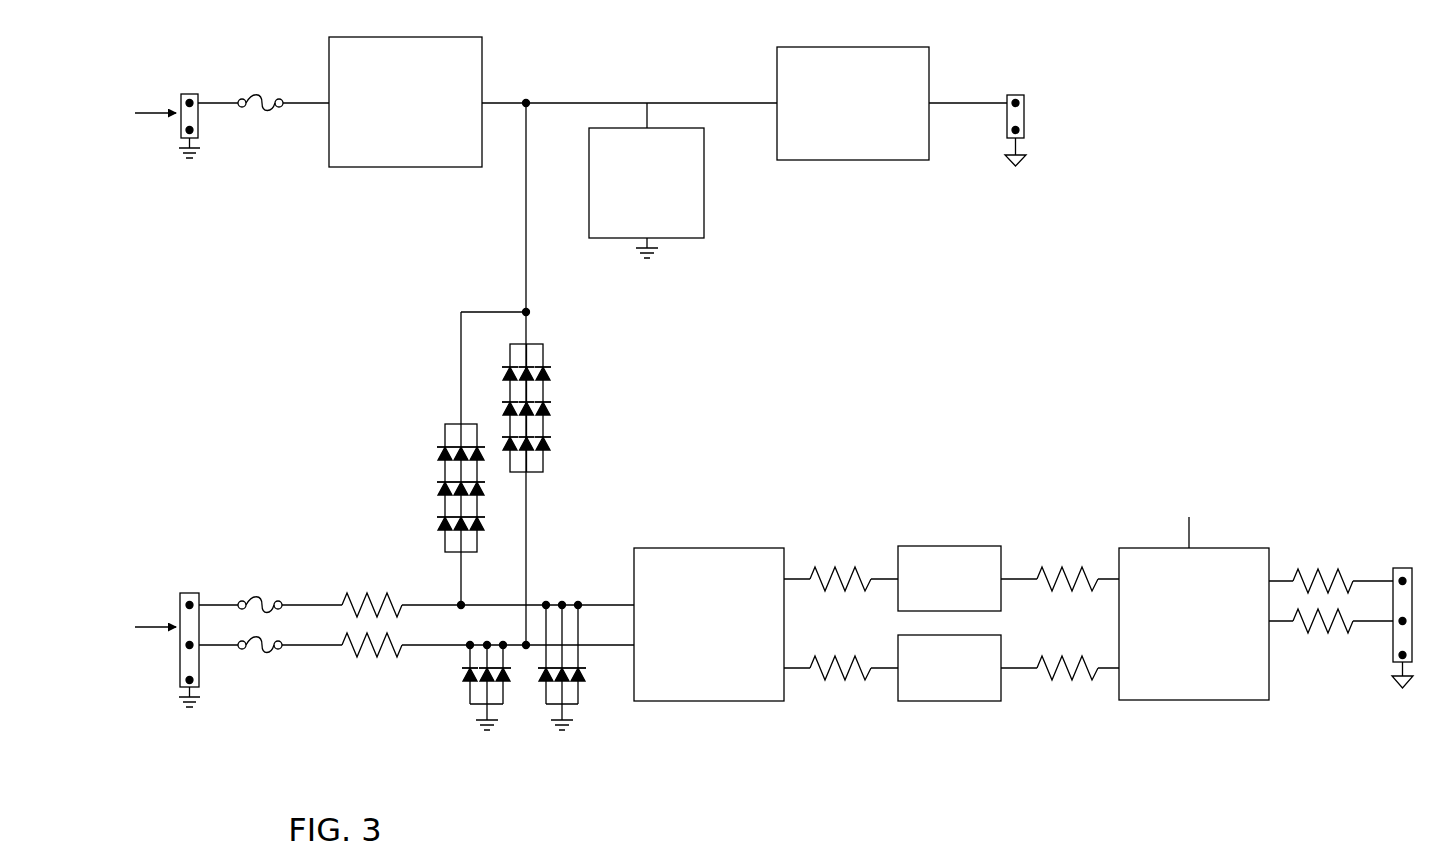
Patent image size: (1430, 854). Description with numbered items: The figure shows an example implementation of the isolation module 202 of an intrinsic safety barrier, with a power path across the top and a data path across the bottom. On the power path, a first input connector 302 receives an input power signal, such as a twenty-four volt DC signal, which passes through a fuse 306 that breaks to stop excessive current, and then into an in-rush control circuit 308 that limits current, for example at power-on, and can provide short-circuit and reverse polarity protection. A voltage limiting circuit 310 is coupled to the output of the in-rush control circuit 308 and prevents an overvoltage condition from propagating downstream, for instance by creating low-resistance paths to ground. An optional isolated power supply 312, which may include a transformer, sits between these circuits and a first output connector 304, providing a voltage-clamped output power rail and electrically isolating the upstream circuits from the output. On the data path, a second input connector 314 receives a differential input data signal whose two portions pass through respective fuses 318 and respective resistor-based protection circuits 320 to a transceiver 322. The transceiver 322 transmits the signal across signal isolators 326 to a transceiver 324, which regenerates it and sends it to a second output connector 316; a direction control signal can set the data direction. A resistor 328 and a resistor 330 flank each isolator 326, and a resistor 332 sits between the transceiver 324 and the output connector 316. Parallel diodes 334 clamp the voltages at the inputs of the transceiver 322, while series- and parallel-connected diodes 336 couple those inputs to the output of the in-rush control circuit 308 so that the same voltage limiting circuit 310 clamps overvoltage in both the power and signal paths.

The isolation module 202 is at (744, 435).
The first input connector 302 is at (194, 92).
The first output connector 304 is at (1014, 92).
The fuse 306 is at (264, 92).
The in-rush control circuit 308 is at (428, 172).
The voltage limiting circuit 310 is at (678, 243).
The isolated power supply 312 is at (886, 163).
The second input connector 314 is at (194, 591).
The second output connector 316 is at (1404, 566).
The fuses 318 is at (264, 600).
The protection circuits 320 is at (362, 598).
The transceiver 322 is at (712, 545).
The transceiver 324 is at (1136, 545).
The signal isolators 326 is at (978, 543).
The resistor 328 is at (832, 568).
The resistor 330 is at (1044, 589).
The resistor 332 is at (1312, 570).
The parallel diodes 334 is at (462, 686).
The series and parallel diodes 336 is at (440, 462).